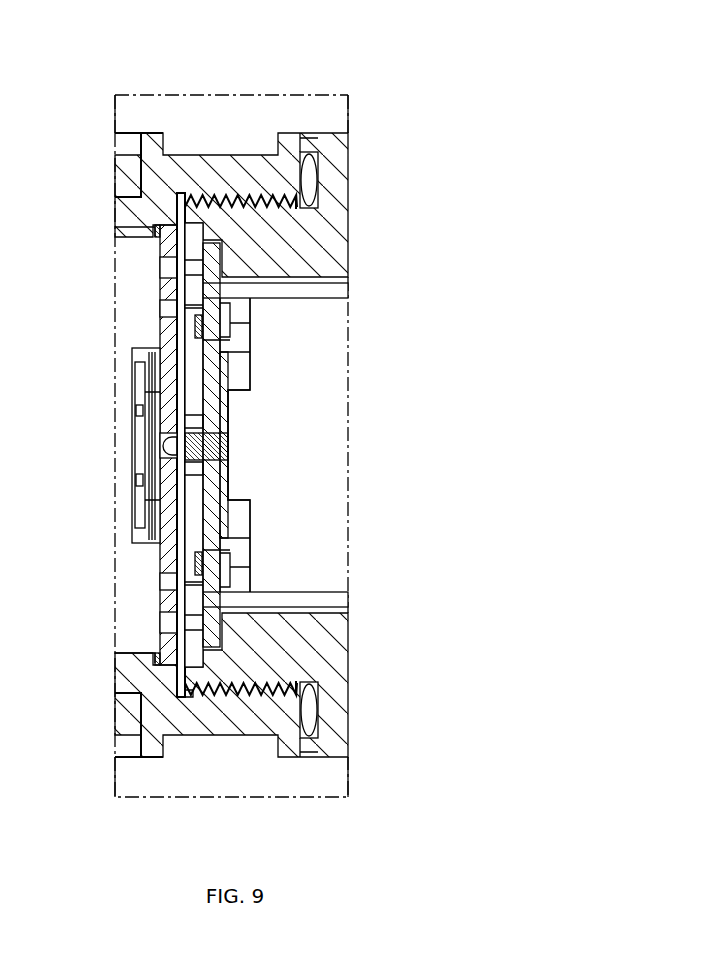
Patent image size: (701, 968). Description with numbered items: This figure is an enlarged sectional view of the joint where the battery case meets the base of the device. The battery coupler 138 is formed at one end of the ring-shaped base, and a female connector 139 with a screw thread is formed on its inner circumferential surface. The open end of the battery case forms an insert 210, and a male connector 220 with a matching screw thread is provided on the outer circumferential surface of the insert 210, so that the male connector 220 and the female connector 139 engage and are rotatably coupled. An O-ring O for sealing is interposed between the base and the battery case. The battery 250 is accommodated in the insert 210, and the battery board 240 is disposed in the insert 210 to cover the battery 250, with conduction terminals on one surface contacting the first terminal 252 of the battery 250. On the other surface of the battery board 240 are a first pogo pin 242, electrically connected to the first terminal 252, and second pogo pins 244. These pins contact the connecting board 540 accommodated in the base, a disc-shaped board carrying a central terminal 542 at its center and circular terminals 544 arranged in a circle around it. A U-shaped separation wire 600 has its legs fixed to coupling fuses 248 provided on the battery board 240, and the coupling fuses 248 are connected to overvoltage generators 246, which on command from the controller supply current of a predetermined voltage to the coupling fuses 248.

The battery coupler 138 is at (200, 172).
The female connector 139 is at (250, 200).
The male connector 220 is at (245, 198).
The O-ring O is at (310, 175).
The insert 210 is at (245, 318).
The battery 250 is at (308, 408).
The first terminal 252 is at (225, 447).
The battery board 240 is at (212, 490).
The separation wire 600 is at (302, 598).
The coupling fuse 248 is at (198, 268).
The circular terminal 544 is at (192, 306).
The second pogo pin 244 is at (192, 322).
The overvoltage generator 246 is at (197, 335).
The connecting board 540 is at (160, 398).
The central terminal 542 is at (163, 452).
The first pogo pin 242 is at (182, 457).